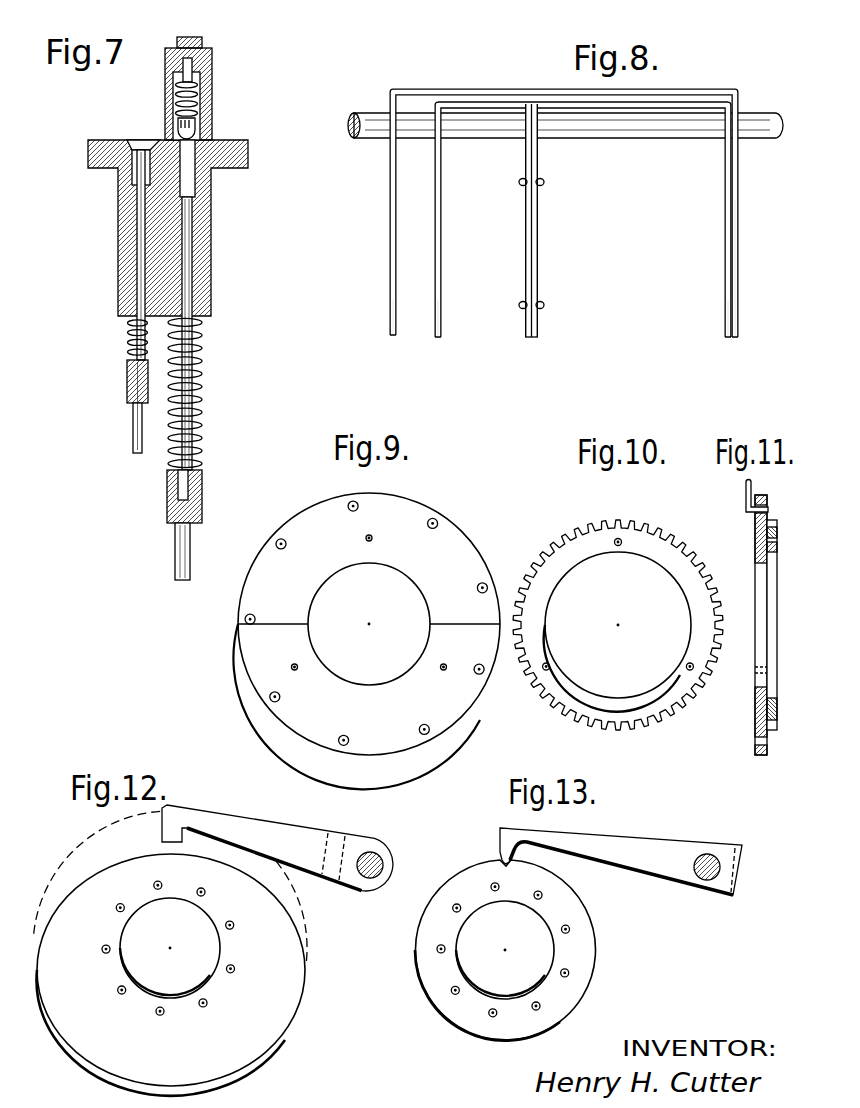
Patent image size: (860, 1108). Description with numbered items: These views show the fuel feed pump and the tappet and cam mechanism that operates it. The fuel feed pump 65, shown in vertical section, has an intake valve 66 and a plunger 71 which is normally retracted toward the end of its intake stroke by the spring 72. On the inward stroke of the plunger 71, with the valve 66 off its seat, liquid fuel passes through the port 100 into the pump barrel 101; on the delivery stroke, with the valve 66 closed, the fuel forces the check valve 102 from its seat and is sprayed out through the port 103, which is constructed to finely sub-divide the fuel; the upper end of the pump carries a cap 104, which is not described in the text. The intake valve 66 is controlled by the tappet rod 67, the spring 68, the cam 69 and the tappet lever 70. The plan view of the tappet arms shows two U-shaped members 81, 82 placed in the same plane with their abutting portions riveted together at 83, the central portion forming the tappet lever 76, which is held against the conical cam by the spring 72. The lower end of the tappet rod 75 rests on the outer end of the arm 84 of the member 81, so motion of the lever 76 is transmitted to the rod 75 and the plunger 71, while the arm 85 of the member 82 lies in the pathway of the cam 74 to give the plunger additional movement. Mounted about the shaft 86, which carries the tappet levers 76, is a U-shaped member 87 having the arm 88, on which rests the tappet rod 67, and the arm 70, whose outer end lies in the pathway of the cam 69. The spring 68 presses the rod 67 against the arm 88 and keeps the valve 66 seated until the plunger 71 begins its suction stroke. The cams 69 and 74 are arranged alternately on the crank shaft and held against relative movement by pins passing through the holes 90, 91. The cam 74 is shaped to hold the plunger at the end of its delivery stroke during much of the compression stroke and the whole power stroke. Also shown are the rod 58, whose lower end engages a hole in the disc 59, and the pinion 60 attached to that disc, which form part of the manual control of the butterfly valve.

In FIG. 9, the rod 58 is at (349, 505).
In FIG. 11, the rod 58 is at (752, 488).
In FIG. 9, the disc 59 is at (455, 535).
In FIG. 11, the disc 59 is at (756, 556).
In FIG. 10, the pinion 60 is at (657, 546).
In FIG. 11, the pinion 60 is at (778, 532).
In FIG. 7, the fuel feed pump 65 is at (211, 240).
In FIG. 7, the intake valve 66 is at (130, 140).
In FIG. 7, the tappet rod 67 is at (135, 433).
In FIG. 7, the spring 68 is at (127, 340).
In FIG. 13, the cam 69 is at (570, 906).
In FIG. 8, the tappet lever 70 is at (740, 245).
In FIG. 13, the tappet lever 70 is at (640, 832).
In FIG. 7, the plunger 71 is at (186, 290).
In FIG. 7, the spring 72 is at (197, 400).
In FIG. 12, the cam 74 is at (265, 1021).
In FIG. 7, the tappet rod 75 is at (190, 551).
In FIG. 8, the tappet lever 76 is at (525, 277).
In FIG. 8, the U-shaped member 81 is at (485, 103).
In FIG. 8, the U-shaped member 82 is at (645, 108).
In FIG. 8, the rivets 83 is at (543, 306).
In FIG. 8, the arm 84 is at (438, 339).
In FIG. 8, the arm 85 is at (724, 313).
In FIG. 12, the arm 85 is at (294, 836).
In FIG. 8, the shaft 86 is at (760, 124).
In FIG. 12, the shaft 86 is at (384, 857).
In FIG. 13, the shaft 86 is at (712, 856).
In FIG. 8, the U-shaped member 87 is at (420, 90).
In FIG. 8, the arm 88 is at (389, 305).
In FIG. 12, the hole 90 is at (234, 928).
In FIG. 13, the hole 91 is at (570, 930).
In FIG. 7, the port 100 is at (152, 140).
In FIG. 7, the pump barrel 101 is at (186, 158).
In FIG. 7, the check valve 102 is at (207, 112).
In FIG. 7, the port 103 is at (170, 128).
In FIG. 7, the cap 104 is at (209, 36).